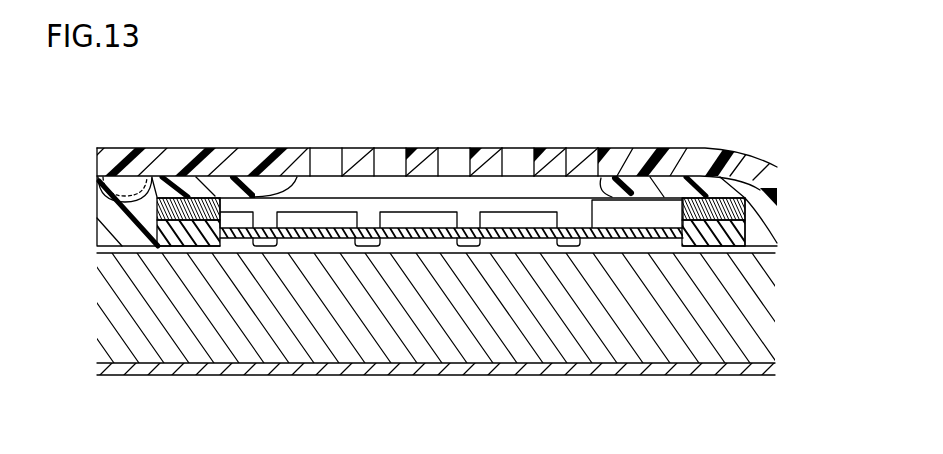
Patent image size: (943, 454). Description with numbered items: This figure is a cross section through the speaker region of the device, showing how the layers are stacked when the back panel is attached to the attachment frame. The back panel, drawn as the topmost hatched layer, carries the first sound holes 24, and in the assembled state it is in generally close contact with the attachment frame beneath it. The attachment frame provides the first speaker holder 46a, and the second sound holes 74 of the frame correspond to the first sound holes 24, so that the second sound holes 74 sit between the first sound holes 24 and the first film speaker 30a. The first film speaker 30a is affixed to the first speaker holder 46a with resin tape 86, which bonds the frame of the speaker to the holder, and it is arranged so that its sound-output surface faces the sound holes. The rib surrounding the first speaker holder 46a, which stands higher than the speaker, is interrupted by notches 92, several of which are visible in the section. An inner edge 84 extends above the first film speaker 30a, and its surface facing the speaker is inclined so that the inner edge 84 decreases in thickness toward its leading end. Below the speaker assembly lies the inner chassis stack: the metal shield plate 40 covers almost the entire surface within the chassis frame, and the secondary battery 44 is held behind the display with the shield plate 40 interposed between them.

The first sound holes 24 is at (308, 147).
The first film speaker 30a is at (235, 228).
The shield plate 40 is at (621, 373).
The secondary battery 44 is at (578, 373).
The first speaker holder 46a is at (677, 172).
The second sound holes 74 is at (626, 174).
The inner edge 84 is at (306, 191).
The resin tape 86 is at (190, 196).
The notches 92 is at (243, 249).